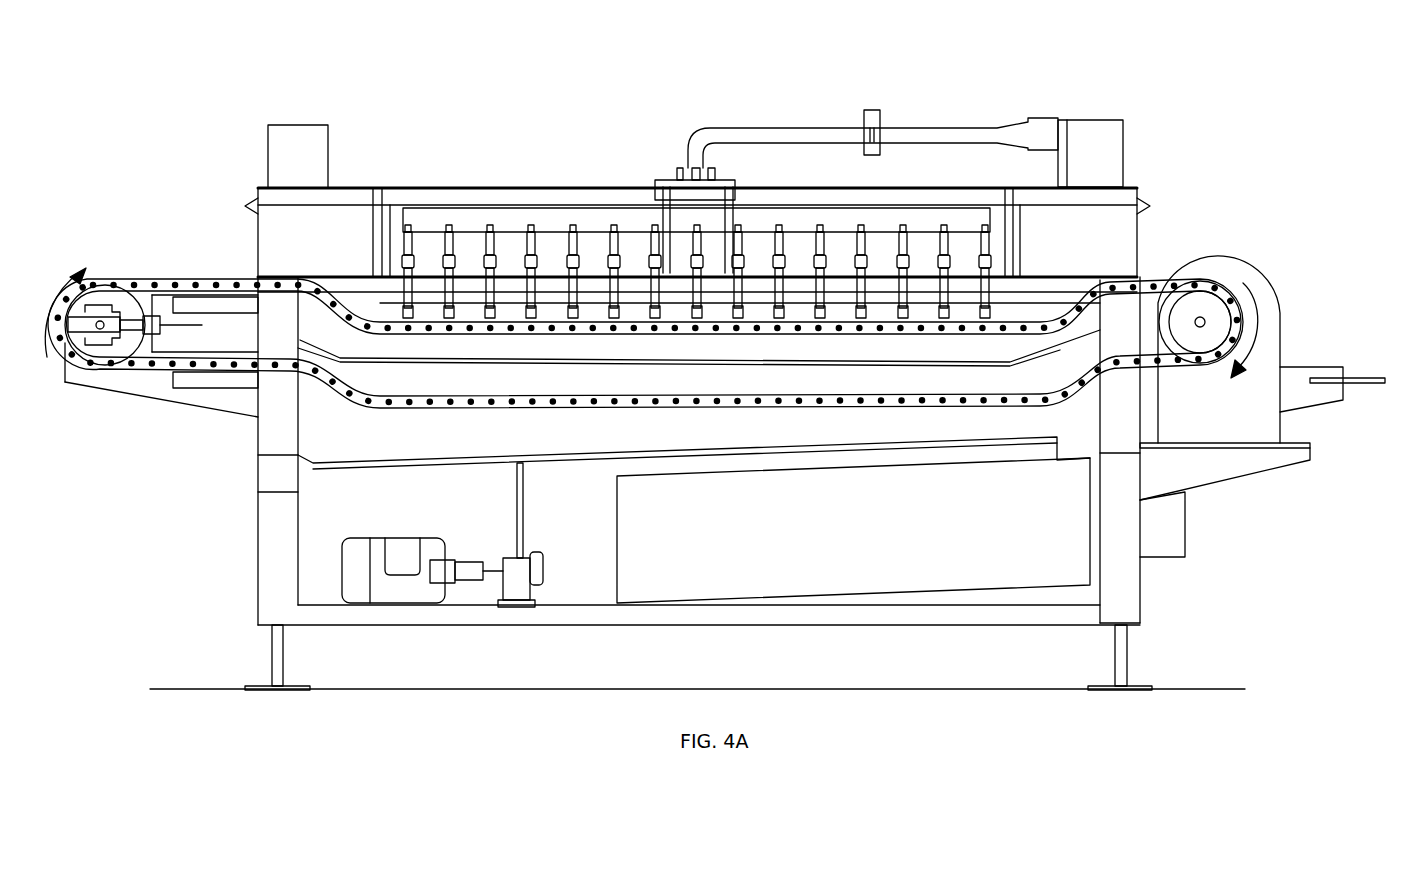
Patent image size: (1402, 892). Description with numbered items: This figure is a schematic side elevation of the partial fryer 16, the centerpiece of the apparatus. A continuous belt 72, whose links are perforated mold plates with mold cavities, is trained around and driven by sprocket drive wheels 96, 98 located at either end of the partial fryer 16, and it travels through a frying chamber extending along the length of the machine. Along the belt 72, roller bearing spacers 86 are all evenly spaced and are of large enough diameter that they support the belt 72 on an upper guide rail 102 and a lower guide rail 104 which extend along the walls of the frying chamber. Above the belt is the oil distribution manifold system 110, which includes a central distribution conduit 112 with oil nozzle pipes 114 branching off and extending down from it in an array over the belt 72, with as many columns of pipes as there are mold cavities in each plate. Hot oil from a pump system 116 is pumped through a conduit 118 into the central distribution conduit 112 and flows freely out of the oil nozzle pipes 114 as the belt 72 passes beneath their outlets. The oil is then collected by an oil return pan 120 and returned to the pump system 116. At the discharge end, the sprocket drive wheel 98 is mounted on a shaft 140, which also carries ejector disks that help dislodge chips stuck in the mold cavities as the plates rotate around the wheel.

The partial fryer 16 is at (322, 92).
The continuous belt 72 is at (342, 398).
The roller bearing spacers 86 is at (485, 331).
The sprocket drive wheel 96 is at (114, 302).
The sprocket drive wheel 98 is at (1200, 288).
The upper guide rail 102 is at (917, 339).
The lower guide rail 104 is at (835, 417).
The oil distribution manifold system 110 is at (632, 184).
The central distribution conduit 112 is at (442, 222).
The oil nozzle pipes 114 is at (945, 270).
The pump system 116 is at (938, 538).
The conduit 118 is at (946, 130).
The oil return pan 120 is at (986, 370).
The shaft 140 is at (1200, 335).